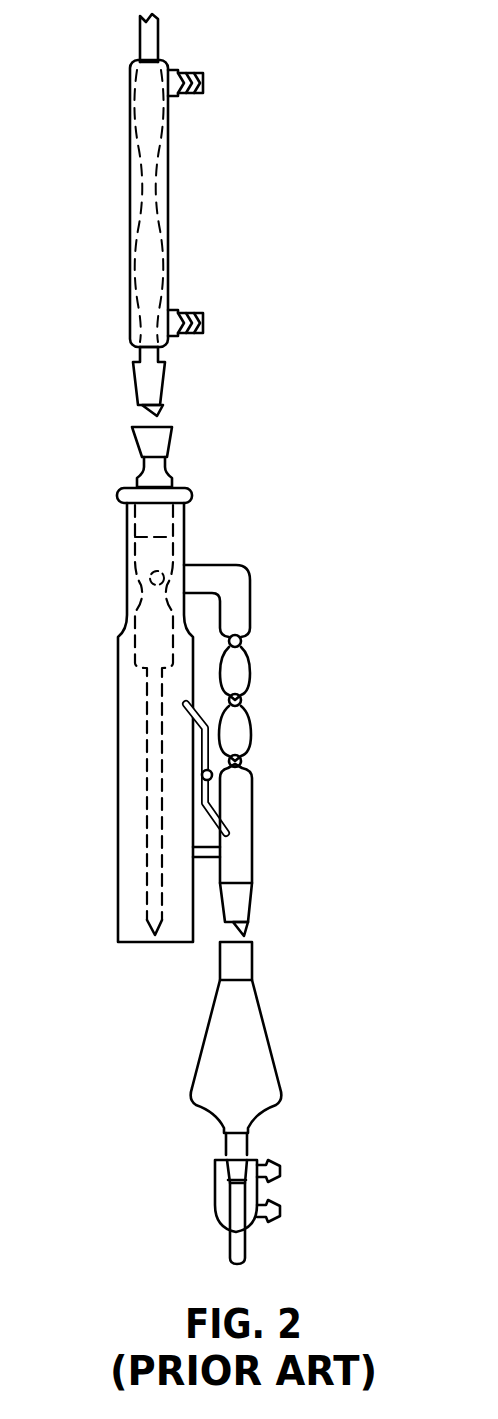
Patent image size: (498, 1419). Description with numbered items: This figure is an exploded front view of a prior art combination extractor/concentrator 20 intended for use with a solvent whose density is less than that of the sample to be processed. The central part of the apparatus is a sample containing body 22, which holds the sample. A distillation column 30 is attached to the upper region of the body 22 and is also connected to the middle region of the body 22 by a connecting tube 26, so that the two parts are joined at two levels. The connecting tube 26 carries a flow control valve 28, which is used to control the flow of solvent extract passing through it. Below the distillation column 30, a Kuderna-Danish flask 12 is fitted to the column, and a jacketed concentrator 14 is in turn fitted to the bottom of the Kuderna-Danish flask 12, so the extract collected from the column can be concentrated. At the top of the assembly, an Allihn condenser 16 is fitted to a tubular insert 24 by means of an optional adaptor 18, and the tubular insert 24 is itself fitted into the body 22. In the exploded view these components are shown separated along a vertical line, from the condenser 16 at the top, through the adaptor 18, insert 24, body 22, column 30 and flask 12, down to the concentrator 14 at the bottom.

The Kuderna-Danish flask 12 is at (272, 1035).
The jacketed concentrator 14 is at (215, 1198).
The Allihn condenser 16 is at (168, 178).
The adaptor 18 is at (172, 440).
The extractor/concentrator 20 is at (121, 962).
The sample containing body 22 is at (118, 781).
The tubular insert 24 is at (130, 545).
The connecting tube 26 is at (213, 743).
The flow control valve 28 is at (235, 780).
The distillation column 30 is at (252, 840).